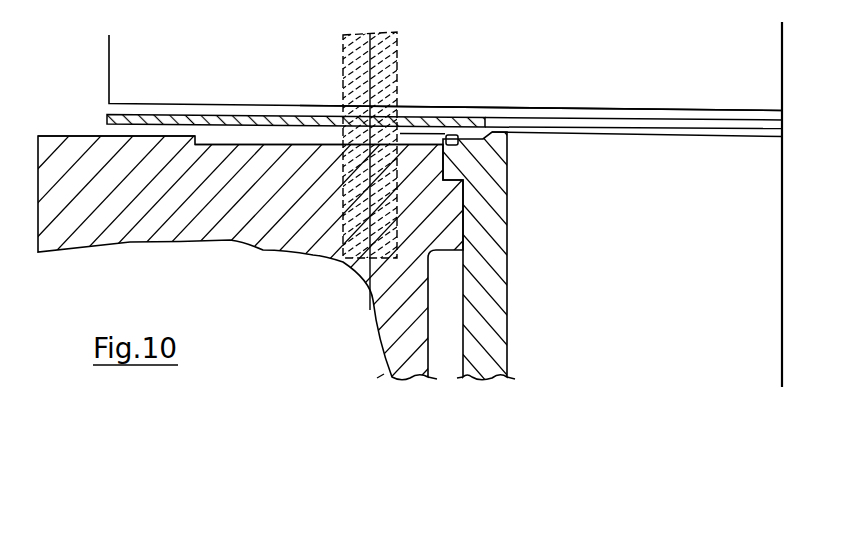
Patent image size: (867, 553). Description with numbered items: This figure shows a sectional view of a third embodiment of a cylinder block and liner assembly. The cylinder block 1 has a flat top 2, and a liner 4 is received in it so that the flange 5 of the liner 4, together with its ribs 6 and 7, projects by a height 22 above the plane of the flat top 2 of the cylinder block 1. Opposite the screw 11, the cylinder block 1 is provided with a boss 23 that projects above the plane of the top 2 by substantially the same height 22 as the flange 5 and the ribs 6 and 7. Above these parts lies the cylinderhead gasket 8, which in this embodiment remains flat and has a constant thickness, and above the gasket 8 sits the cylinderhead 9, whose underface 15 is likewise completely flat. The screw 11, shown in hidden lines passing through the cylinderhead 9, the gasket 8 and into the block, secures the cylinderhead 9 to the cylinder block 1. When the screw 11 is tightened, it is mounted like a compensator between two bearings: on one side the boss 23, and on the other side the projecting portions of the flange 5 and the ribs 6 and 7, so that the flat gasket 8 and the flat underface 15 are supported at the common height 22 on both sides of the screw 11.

The cylinder block 1 is at (103, 238).
The top of the cylinder block 2 is at (301, 142).
The liner 4 is at (492, 359).
The flange 5 is at (497, 190).
The rib 6 is at (493, 136).
The rib 7 is at (455, 143).
The cylinderhead gasket 8 is at (160, 120).
The cylinderhead 9 is at (192, 61).
The screw 11 is at (398, 48).
The underface of the cylinderhead 15 is at (223, 104).
The height 22 is at (407, 155).
The boss 23 is at (105, 148).